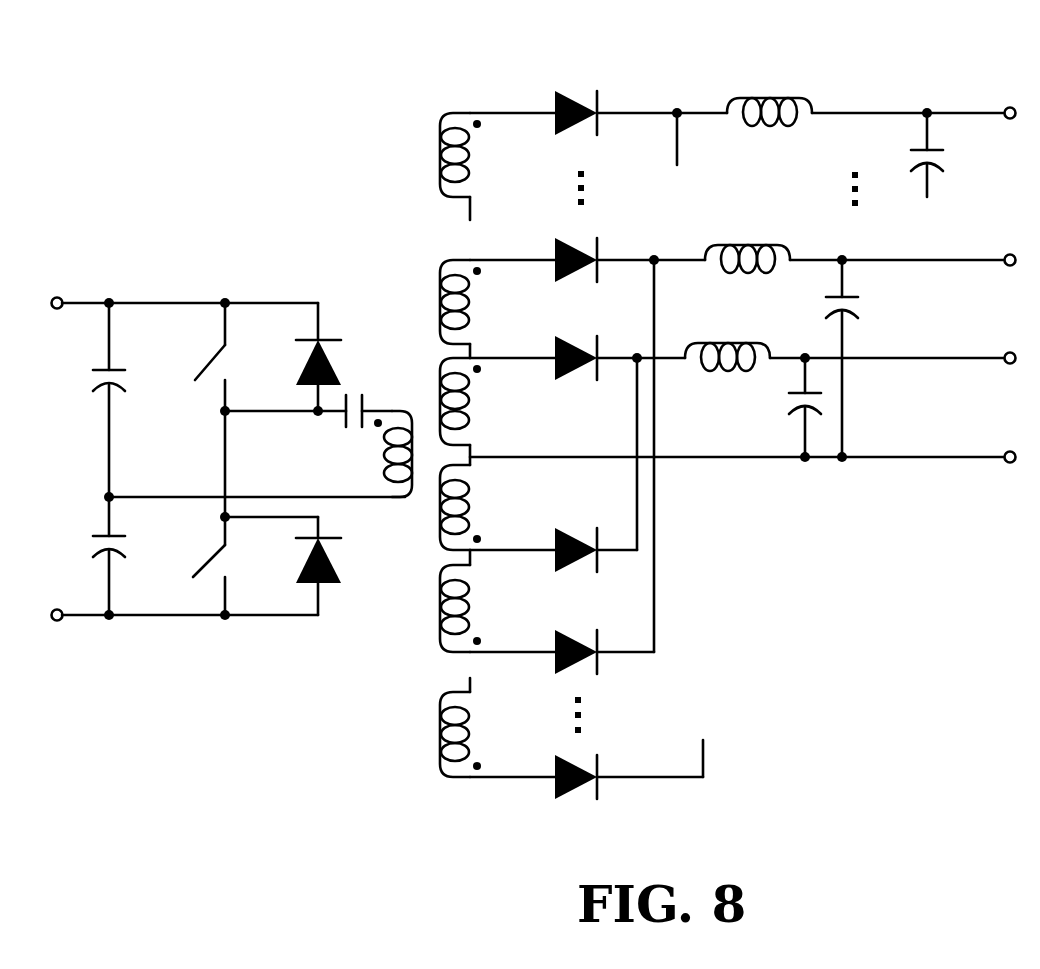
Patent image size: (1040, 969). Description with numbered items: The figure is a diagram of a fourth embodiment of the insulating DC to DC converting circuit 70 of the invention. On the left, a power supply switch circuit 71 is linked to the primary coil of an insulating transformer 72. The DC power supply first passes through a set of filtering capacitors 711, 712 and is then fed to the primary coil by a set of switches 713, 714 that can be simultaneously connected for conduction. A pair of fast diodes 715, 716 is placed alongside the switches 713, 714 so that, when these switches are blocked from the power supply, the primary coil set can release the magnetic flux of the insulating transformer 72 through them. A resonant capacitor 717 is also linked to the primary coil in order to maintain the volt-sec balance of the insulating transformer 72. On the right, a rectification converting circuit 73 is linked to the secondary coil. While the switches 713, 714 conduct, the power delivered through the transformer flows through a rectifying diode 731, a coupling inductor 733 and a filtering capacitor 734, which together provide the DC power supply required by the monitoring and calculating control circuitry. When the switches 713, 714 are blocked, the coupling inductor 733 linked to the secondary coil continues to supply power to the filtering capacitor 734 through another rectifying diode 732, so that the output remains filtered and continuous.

The power converter circuit 70 is at (196, 126).
The power supply switch circuit 71 is at (194, 298).
The insulating transformer 72 is at (403, 332).
The rectification converting circuit 73 is at (697, 100).
The filtering capacitor 711 is at (88, 377).
The filtering capacitor 712 is at (90, 525).
The switch 713 is at (200, 363).
The switch 714 is at (197, 557).
The fast diode 715 is at (290, 360).
The fast diode 716 is at (297, 568).
The resonant capacitor 717 is at (337, 423).
The rectifying diode 731 is at (548, 377).
The rectifying diode 732 is at (558, 528).
The coupling inductor 733 is at (730, 377).
The filtering capacitor 734 is at (782, 413).